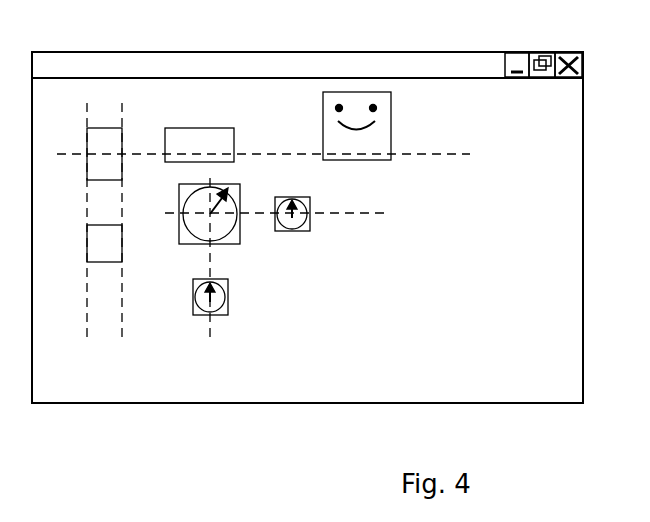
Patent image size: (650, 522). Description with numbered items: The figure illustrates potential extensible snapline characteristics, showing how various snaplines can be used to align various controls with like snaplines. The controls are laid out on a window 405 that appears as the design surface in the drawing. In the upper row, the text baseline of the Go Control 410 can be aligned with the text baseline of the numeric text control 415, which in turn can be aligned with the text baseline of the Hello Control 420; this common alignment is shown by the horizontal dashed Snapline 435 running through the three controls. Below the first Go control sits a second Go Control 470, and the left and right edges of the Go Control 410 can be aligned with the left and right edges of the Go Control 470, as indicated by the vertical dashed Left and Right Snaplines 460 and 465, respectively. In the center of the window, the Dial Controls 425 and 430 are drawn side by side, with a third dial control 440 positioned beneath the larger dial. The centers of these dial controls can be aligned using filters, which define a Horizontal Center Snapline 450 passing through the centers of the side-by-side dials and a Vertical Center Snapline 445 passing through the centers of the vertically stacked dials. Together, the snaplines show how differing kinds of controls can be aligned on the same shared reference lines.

The application window 405 is at (339, 52).
The Go Control 410 is at (105, 180).
The 1234 Control 415 is at (200, 128).
The Hello Control 420 is at (355, 160).
The Dial Control 425 is at (240, 190).
The Dial Control 430 is at (292, 231).
The Snapline 435 is at (448, 154).
The second small dial control 440 is at (228, 297).
The Vertical Center Snapline 445 is at (211, 330).
The Horizontal Center Snapline 450 is at (368, 213).
The Left Snapline 460 is at (87, 342).
The Right Snapline 465 is at (122, 107).
The Go Control 470 is at (105, 262).